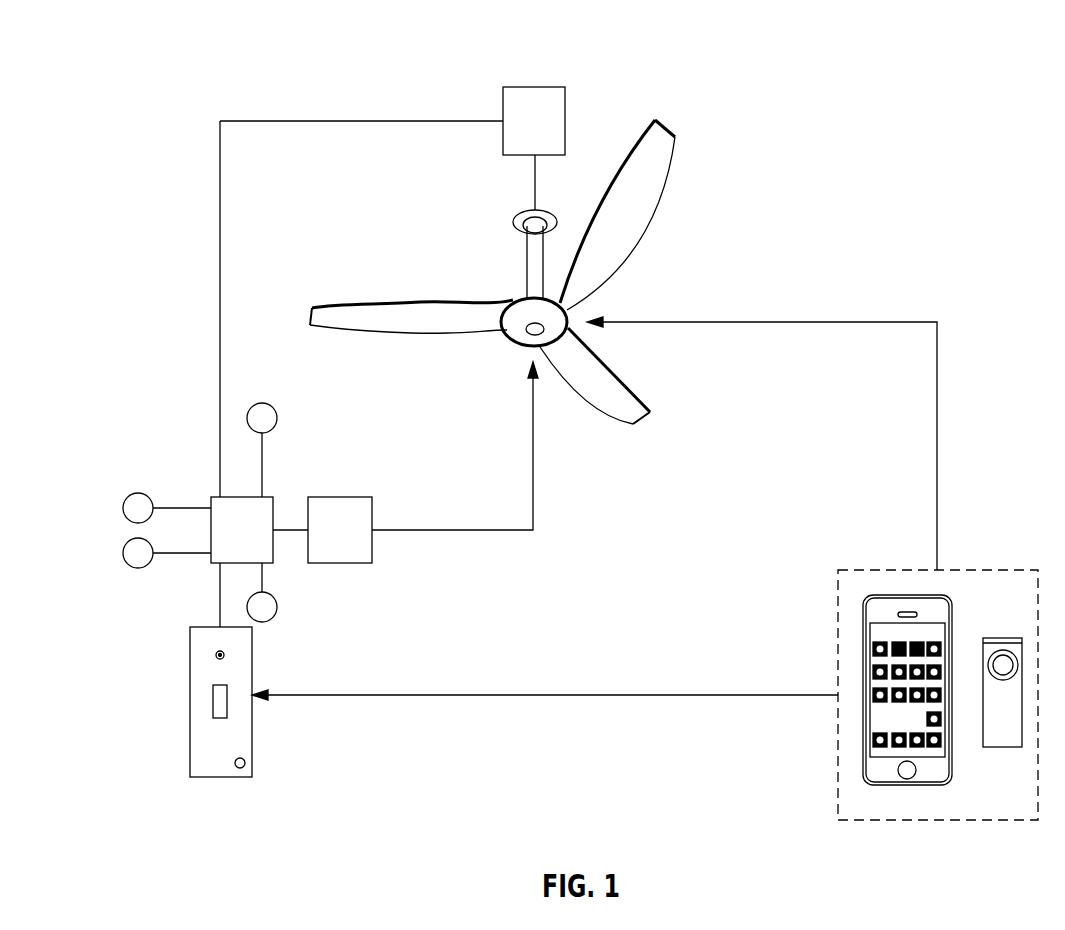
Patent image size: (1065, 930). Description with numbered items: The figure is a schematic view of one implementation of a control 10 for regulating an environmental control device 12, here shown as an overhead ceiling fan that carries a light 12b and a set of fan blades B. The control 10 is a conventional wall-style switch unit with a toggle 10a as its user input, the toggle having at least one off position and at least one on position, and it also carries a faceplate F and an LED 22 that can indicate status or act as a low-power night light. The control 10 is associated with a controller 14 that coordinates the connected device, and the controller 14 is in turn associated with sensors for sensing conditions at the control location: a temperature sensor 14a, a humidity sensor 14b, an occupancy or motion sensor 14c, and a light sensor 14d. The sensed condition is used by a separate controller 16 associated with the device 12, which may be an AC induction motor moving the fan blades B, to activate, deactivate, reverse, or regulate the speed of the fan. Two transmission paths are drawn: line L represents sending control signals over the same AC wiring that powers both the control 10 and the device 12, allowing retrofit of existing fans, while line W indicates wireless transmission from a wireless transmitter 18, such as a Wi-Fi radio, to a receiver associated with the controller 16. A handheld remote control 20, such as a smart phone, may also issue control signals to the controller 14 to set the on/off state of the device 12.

The control 10 is at (212, 715).
The toggle 10a is at (228, 705).
The environmental control device 12 is at (543, 269).
The light 12b is at (528, 345).
The controller 14 is at (255, 543).
The temperature sensor 14a is at (278, 417).
The humidity sensor 14b is at (137, 493).
The occupancy sensor 14c is at (137, 568).
The light sensor 14d is at (277, 608).
The separate controller 16 is at (547, 133).
The wireless transmitter 18 is at (355, 543).
The remote control 20 is at (983, 570).
The LED 22 is at (247, 765).
The fan blades B is at (662, 123).
The faceplate F is at (252, 643).
The line L is at (332, 121).
The line W is at (467, 527).